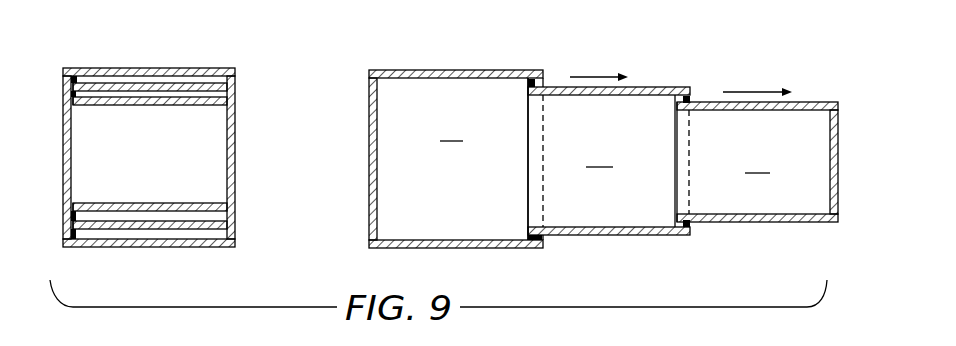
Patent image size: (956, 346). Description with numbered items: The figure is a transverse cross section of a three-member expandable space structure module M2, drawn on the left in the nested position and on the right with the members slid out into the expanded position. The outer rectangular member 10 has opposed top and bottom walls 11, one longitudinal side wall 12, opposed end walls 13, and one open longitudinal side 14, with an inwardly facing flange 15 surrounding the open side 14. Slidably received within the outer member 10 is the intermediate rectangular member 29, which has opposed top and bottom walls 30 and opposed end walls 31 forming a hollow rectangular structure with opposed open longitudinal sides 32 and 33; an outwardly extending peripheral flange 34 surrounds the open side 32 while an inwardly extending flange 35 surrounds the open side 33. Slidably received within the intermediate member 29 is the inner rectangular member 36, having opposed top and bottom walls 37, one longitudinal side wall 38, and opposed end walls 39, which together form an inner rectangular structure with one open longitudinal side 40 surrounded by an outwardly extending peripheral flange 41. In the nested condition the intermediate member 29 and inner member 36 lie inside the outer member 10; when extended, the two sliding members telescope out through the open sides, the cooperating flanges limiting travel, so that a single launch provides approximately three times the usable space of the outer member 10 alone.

The outer rectangular member 10 is at (469, 151).
The top and bottom walls 11 is at (180, 68).
The longitudinal side wall 12 is at (71, 140).
The end walls 13 is at (451, 130).
The open longitudinal side 14 is at (236, 70).
The inwardly facing flange 15 is at (237, 237).
The intermediate rectangular member 29 is at (407, 142).
The top and bottom walls 30 is at (148, 83).
The end walls 31 is at (599, 156).
The open longitudinal side 32 is at (528, 135).
The open longitudinal side 33 is at (689, 135).
The outwardly extending peripheral flange 34 is at (85, 68).
The inwardly extending flange 35 is at (236, 88).
The inner rectangular member 36 is at (473, 142).
The top and bottom walls 37 is at (770, 110).
The longitudinal side wall 38 is at (838, 160).
The end walls 39 is at (758, 162).
The open longitudinal side 40 is at (75, 203).
The outwardly extending peripheral flange 41 is at (78, 95).
The three-member module M2 is at (172, 29).